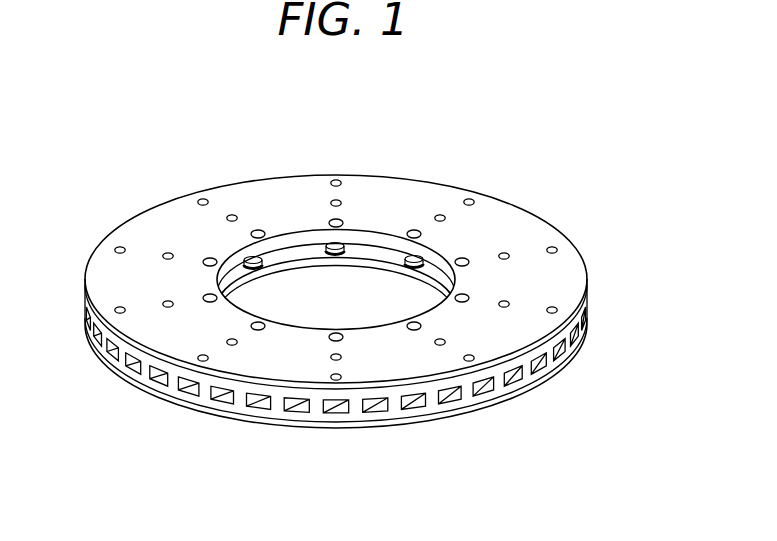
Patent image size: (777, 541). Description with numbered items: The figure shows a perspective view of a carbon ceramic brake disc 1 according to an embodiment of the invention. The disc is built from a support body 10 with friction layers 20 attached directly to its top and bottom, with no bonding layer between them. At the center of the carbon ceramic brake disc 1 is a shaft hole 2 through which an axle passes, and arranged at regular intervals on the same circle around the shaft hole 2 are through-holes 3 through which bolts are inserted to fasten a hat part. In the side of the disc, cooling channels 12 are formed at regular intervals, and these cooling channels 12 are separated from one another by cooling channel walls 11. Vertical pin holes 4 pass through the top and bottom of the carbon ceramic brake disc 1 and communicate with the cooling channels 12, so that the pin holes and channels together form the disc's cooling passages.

The carbon ceramic brake disc 1 is at (503, 93).
The shaft hole 2 is at (371, 279).
The through-holes 3 is at (417, 229).
The vertical pin holes 4 is at (506, 302).
The support body 10 is at (337, 414).
The cooling channel walls 11 is at (398, 404).
The cooling channels 12 is at (452, 398).
The friction layers 20 is at (152, 315).